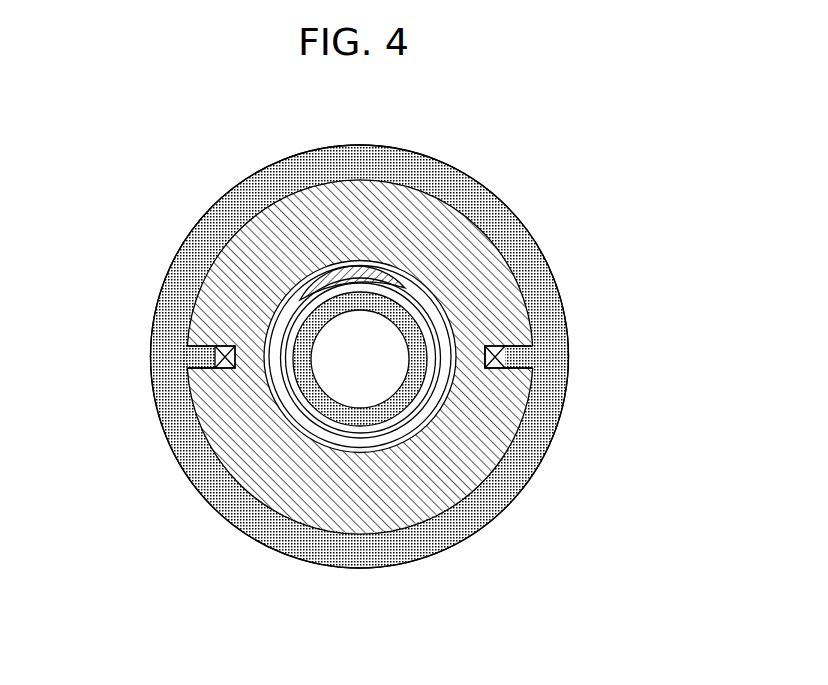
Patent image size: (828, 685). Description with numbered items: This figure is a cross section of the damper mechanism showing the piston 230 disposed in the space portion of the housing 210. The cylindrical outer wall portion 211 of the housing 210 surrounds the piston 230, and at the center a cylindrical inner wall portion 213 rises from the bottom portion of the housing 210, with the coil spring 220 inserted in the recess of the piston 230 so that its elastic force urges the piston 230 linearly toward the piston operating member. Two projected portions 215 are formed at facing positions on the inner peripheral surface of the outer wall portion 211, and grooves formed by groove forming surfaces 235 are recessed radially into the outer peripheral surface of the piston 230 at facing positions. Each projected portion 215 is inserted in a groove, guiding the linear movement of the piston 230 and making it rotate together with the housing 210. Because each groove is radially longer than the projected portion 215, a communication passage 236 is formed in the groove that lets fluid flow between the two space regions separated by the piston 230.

The housing 210 is at (237, 185).
The outer wall portion 211 is at (332, 166).
The inner wall portion 213 is at (360, 410).
The projected portion 215 is at (200, 370).
The coil spring 220 is at (298, 415).
The piston 230 is at (453, 202).
The groove forming surface 235 is at (187, 368).
The communication passage 236 is at (220, 348).